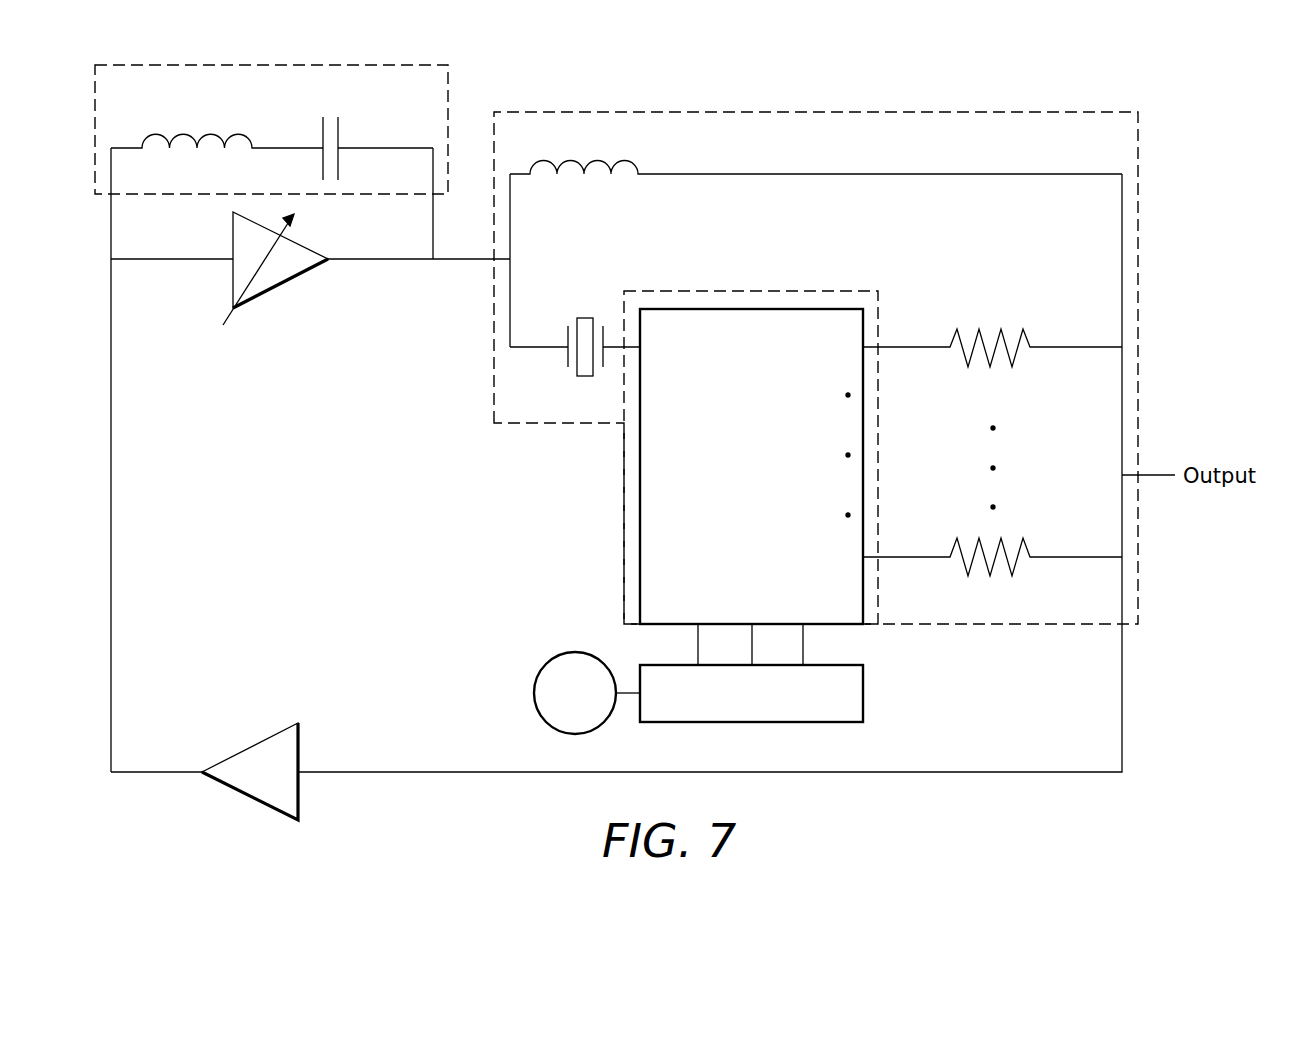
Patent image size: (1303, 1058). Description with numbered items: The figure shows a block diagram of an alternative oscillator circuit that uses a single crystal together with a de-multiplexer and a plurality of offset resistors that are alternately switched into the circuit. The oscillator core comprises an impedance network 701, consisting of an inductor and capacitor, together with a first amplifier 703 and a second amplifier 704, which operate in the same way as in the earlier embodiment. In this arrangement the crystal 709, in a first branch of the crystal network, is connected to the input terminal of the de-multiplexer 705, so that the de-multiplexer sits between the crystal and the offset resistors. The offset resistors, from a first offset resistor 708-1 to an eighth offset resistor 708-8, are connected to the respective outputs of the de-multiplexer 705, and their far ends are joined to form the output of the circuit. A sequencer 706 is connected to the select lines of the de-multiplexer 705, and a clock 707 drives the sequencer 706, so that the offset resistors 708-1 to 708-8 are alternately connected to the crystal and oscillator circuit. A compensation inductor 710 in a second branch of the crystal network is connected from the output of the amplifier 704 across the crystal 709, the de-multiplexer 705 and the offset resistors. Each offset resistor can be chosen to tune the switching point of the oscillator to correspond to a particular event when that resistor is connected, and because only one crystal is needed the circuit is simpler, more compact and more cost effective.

The impedance network 701 is at (448, 65).
The amplifier 703 is at (252, 745).
The amplifier 704 is at (287, 285).
The de-multiplexer 705 is at (640, 525).
The sequencer 706 is at (865, 692).
The clock 707 is at (548, 662).
The offset resistor 708-1 is at (990, 325).
The offset resistor 708-8 is at (990, 538).
The crystal 709 is at (578, 318).
The compensation inductor 710 is at (585, 177).